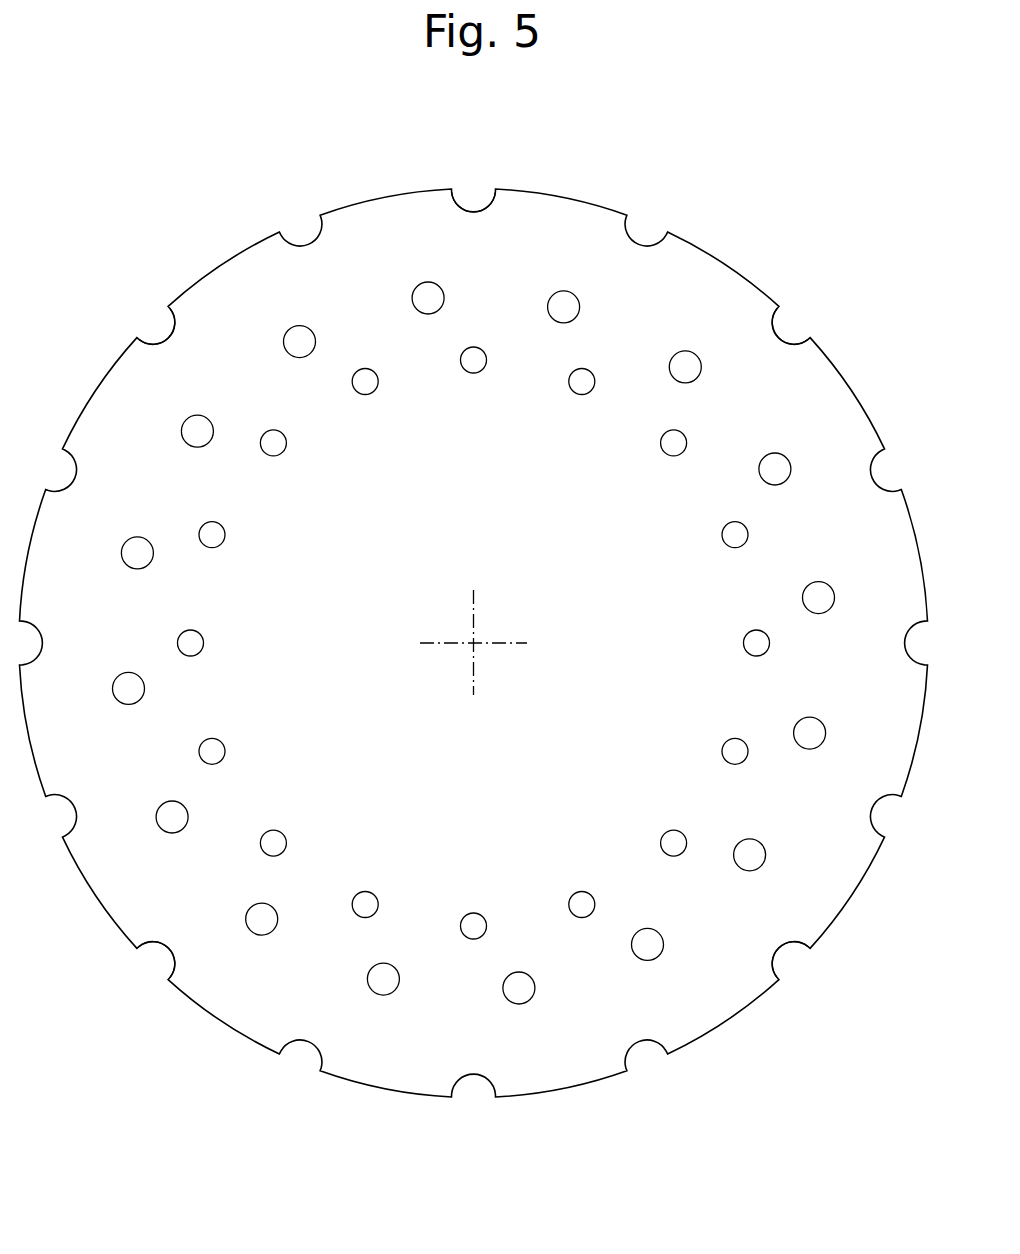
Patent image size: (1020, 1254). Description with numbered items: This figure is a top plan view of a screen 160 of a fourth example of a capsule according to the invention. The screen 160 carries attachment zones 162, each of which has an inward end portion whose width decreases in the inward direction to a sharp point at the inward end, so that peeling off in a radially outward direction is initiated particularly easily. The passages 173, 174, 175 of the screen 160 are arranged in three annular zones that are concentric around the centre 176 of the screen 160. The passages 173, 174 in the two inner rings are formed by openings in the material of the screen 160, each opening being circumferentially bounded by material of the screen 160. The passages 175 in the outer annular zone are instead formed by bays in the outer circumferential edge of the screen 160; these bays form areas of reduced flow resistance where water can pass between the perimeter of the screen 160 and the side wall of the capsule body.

The screen 160 is at (832, 316).
The attachment zones 162 is at (207, 312).
The passages 173 is at (472, 373).
The passages 174 is at (568, 291).
The passages 175 is at (470, 212).
The centre 176 is at (473, 643).